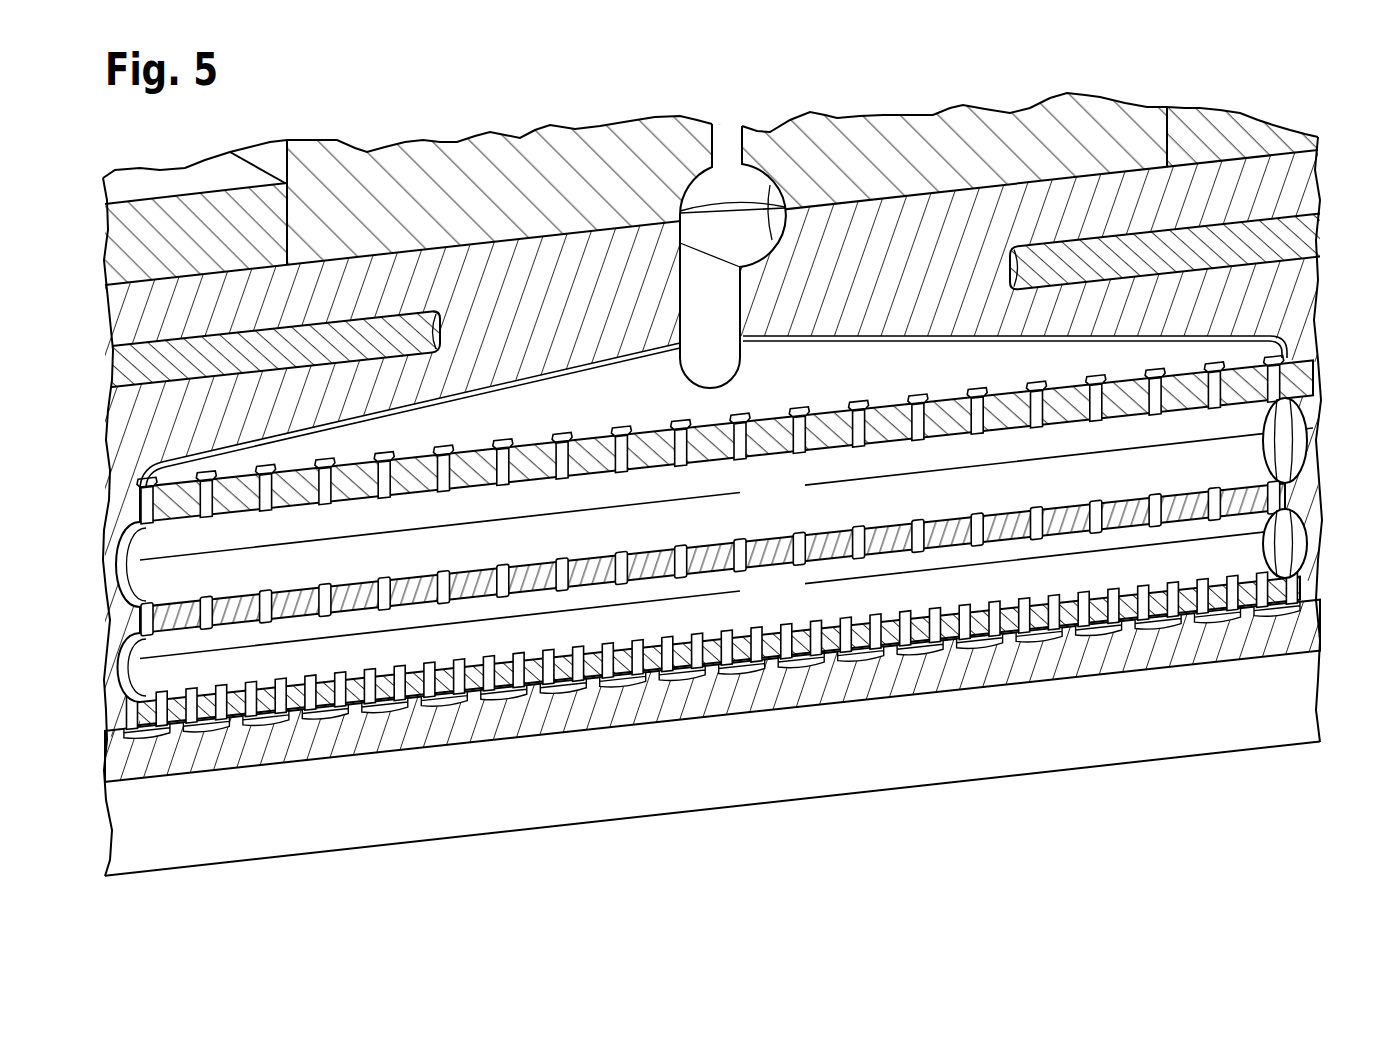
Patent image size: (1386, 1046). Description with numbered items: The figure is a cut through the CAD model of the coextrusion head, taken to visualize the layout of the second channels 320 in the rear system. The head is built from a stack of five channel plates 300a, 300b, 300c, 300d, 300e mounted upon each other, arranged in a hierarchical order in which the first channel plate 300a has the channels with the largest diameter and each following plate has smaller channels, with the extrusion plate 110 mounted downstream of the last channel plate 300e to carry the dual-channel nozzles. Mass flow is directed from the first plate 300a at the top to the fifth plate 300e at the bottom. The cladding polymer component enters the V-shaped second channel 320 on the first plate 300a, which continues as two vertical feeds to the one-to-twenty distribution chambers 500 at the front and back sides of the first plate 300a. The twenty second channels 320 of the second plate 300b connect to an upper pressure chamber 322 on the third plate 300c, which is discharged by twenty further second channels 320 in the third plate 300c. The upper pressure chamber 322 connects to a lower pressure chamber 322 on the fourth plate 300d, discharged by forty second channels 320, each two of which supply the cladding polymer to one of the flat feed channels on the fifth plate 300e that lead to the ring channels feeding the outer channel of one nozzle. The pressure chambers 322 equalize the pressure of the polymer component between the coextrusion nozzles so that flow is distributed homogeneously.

The extrusion plate 110 is at (732, 779).
The first channel plate 300a is at (88, 290).
The second channel plate 300b is at (88, 493).
The third channel plate 300c is at (88, 580).
The fourth channel plate 300d is at (88, 675).
The fifth channel plate 300e is at (88, 740).
The second channel 320 is at (733, 309).
The pressure chamber 322 is at (793, 507).
The distribution chamber 500 is at (797, 392).